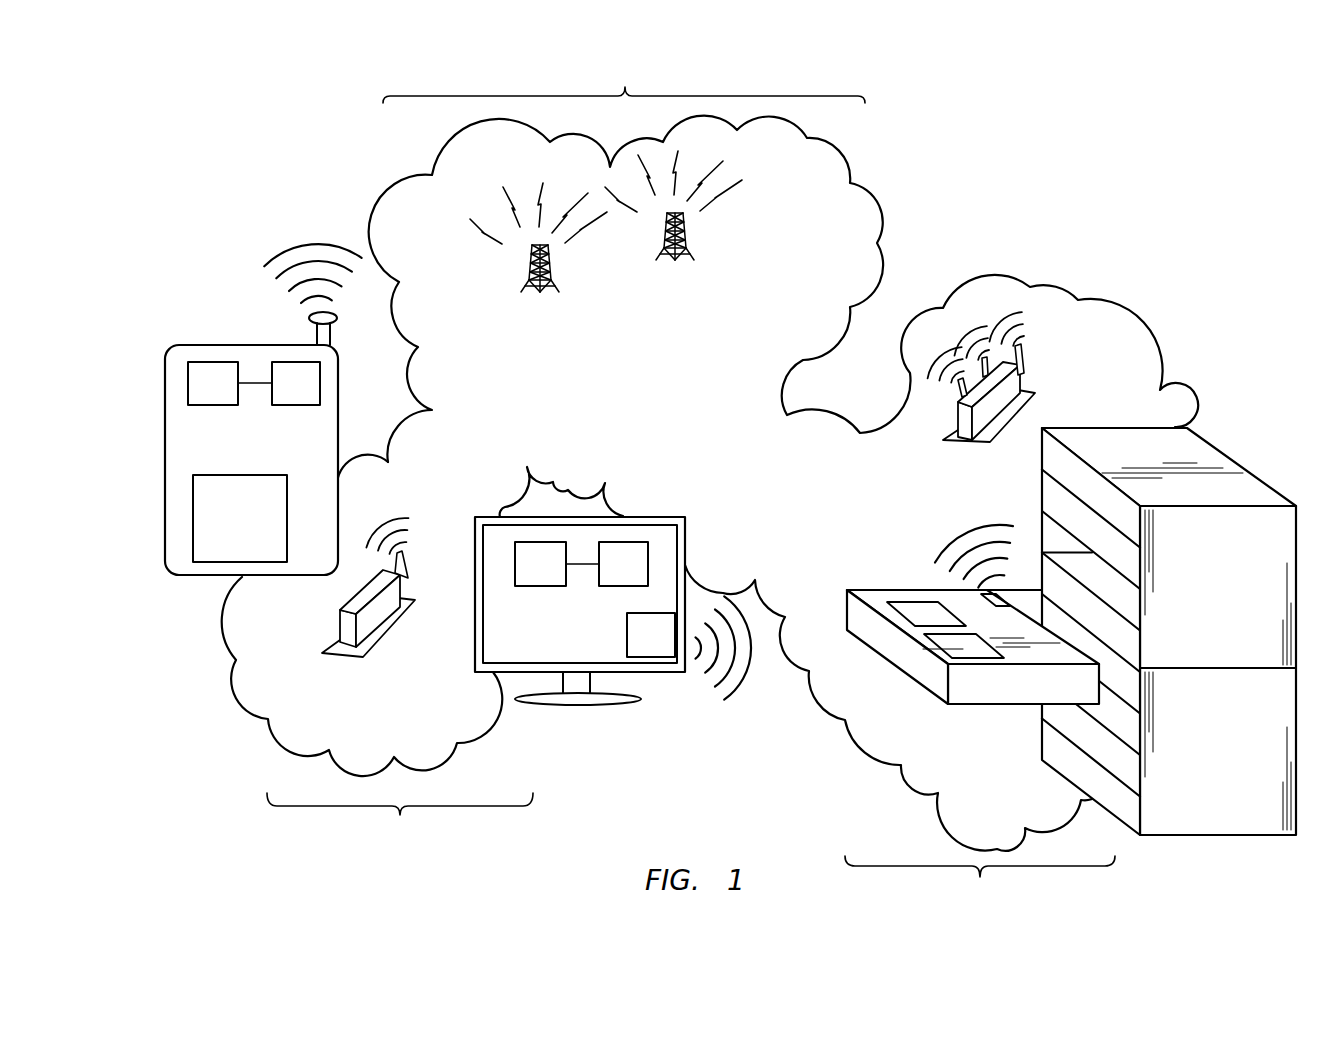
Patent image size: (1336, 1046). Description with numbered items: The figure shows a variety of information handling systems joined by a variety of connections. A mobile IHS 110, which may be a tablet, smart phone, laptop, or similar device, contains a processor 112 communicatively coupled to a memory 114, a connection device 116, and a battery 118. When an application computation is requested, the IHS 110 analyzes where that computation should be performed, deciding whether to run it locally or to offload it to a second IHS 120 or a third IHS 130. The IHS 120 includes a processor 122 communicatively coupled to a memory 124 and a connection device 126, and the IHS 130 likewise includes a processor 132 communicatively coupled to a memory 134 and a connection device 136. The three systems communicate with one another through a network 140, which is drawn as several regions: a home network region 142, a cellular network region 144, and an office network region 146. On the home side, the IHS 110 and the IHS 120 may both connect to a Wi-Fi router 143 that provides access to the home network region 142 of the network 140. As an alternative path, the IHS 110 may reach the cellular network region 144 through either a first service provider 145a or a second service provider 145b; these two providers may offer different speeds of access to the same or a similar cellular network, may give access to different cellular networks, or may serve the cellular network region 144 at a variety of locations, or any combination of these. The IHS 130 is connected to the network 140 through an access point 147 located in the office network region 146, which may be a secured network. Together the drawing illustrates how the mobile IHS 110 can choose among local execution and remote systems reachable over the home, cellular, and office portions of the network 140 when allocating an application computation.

The IHS 110 is at (246, 394).
The processor 112 is at (232, 397).
The memory 114 is at (315, 397).
The connection device 116 is at (338, 330).
The battery 118 is at (259, 532).
The IHS 120 is at (613, 651).
The processor 122 is at (560, 578).
The memory 124 is at (643, 578).
The connection device 126 is at (671, 649).
The IHS 130 is at (942, 651).
The processor 132 is at (915, 606).
The memory 134 is at (934, 628).
The connection device 136 is at (980, 593).
The network 140 is at (882, 192).
The home network region 142 is at (377, 654).
The Wi-Fi router 143 is at (400, 630).
The cellular network region 144 is at (624, 79).
The service provider 145a is at (549, 296).
The service provider 145b is at (685, 263).
The office network region 146 is at (900, 739).
The access point 147 is at (1030, 411).